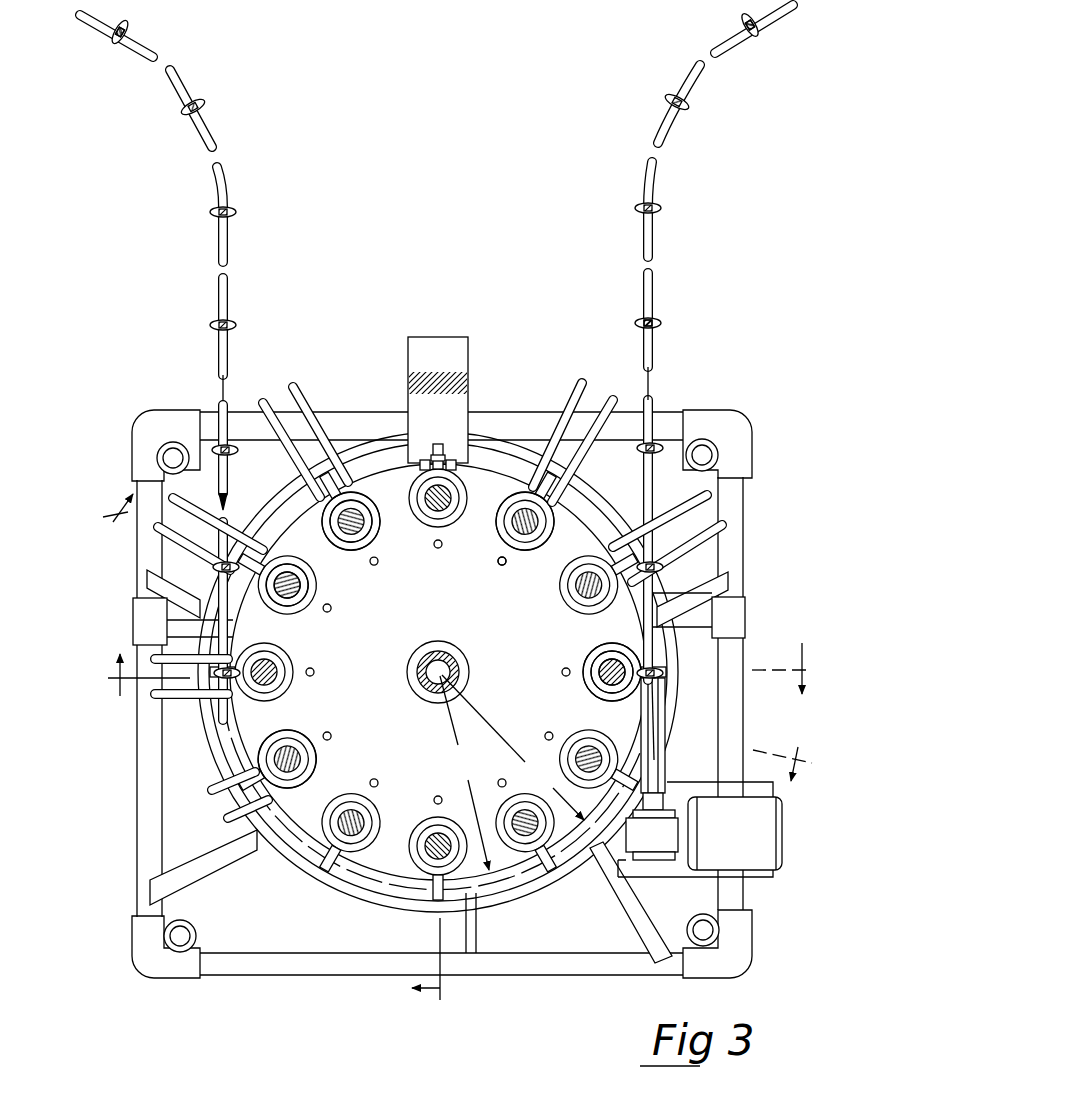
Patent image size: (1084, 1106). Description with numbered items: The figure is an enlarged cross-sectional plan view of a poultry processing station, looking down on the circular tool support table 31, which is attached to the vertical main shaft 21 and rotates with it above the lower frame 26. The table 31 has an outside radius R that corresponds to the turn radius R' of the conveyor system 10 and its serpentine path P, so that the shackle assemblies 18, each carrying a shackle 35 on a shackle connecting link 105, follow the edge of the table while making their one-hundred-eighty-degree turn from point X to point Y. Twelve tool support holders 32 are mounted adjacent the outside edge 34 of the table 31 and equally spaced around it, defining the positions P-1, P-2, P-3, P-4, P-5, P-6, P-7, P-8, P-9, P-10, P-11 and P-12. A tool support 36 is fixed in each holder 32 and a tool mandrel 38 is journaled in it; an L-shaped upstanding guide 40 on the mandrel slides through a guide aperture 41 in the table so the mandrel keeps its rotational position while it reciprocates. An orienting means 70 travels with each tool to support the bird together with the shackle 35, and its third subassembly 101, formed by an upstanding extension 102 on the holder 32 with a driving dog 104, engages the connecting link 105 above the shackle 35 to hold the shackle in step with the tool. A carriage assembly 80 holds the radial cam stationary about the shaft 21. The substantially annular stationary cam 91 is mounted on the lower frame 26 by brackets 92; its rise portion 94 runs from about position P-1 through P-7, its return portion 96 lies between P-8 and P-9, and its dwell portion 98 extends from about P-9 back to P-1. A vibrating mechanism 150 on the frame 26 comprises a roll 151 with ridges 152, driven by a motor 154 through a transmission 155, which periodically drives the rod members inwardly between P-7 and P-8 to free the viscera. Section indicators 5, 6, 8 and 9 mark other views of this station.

The section line 5- 5 is at (118, 503).
The section line 6- 6 is at (147, 663).
The section line 8- 8 is at (782, 773).
The section line 9- 9 is at (785, 680).
The conveyor system 10 is at (271, 396).
The shackle assembly 18 is at (127, 30).
The main shaft 21 is at (446, 656).
The lower frame 26 is at (333, 968).
The tool support table 31 is at (373, 708).
The tool support holder 32 is at (296, 576).
The outside edge 34 is at (588, 551).
The shackle 35 is at (150, 58).
The tool support 36 is at (369, 533).
The tool mandrel 38 is at (341, 535).
The L-shaped upstanding guide 40 is at (438, 547).
The guide aperture 41 is at (499, 560).
The orienting means 70 is at (706, 522).
The carriage assembly 80 is at (457, 370).
The stationary cam 91 is at (505, 903).
The brackets 92 is at (148, 582).
The rise portion 94 is at (351, 896).
The return portion 96 is at (618, 601).
The dwell portion 98 is at (486, 442).
The third subassembly 101 is at (343, 490).
The upstanding extension 102 is at (450, 479).
The driving dog 104 is at (441, 460).
The shackle connecting link 105 is at (121, 43).
The vibrating mechanism 150 is at (693, 780).
The roll 151 is at (660, 691).
The ridges 152 is at (663, 716).
The motor 154 is at (745, 838).
The transmission 155 is at (661, 841).
The serpentine path P is at (229, 400).
The position P-1 is at (250, 566).
The position P-2 is at (236, 663).
The position P-3 is at (244, 789).
The position P-4 is at (334, 880).
The position P-5 is at (431, 906).
The position P-6 is at (543, 861).
The position P-7 is at (620, 767).
The position P-8 is at (650, 664).
The position P-9 is at (625, 556).
The position P-10 is at (548, 485).
The position P-11 is at (447, 461).
The position P-12 is at (326, 481).
The outside radius R is at (464, 773).
The turn radius R' is at (513, 747).
The point X is at (222, 675).
The point Y is at (660, 673).